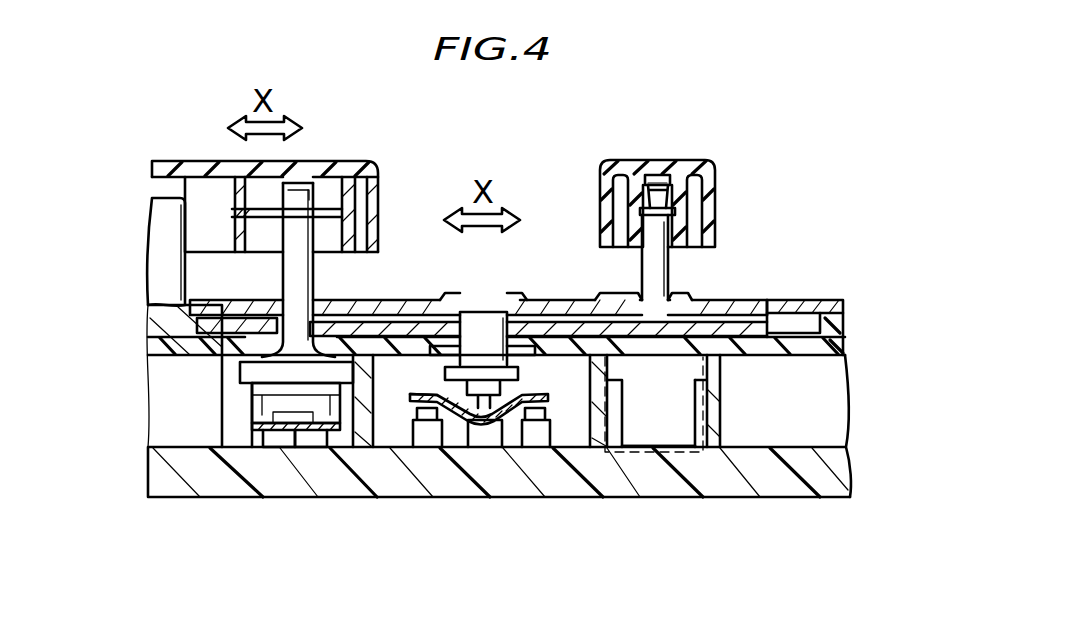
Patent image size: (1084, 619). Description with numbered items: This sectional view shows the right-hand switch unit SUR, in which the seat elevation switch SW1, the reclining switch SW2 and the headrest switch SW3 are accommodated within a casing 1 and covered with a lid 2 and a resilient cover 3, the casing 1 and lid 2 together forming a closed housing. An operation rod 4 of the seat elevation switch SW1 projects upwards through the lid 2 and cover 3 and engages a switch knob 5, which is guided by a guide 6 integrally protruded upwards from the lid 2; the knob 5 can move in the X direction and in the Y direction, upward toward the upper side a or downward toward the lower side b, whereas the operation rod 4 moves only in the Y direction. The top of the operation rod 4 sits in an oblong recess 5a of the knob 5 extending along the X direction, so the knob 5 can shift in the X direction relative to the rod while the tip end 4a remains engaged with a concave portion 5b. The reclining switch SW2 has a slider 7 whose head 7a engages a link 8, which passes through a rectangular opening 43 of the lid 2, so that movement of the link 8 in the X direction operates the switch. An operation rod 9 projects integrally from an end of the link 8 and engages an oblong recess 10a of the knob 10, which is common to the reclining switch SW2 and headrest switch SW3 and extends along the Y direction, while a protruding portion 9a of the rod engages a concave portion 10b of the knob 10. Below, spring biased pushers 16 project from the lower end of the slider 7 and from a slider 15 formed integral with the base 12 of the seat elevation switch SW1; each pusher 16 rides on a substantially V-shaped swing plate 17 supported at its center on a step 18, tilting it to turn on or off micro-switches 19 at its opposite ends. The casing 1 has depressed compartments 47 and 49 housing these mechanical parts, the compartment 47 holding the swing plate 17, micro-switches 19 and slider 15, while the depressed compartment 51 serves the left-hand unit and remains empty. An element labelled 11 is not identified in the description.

The casing 1 is at (833, 474).
The lid 2 is at (840, 320).
The resilient cover 3 is at (824, 300).
The operation rod 4 is at (305, 276).
The tip end 4a is at (292, 195).
The switch knob 5 is at (183, 161).
The oblong recess 5a is at (265, 240).
The concave portion 5b is at (330, 212).
The guide 6 is at (160, 257).
The slider 7 is at (445, 372).
The head 7a is at (482, 328).
The link 8 is at (413, 322).
The operation rod 9 is at (665, 276).
The protruding portion 9a is at (650, 195).
The knob 10 is at (702, 160).
The oblong recess 10a is at (660, 178).
The concave portion 10b is at (675, 202).
The slider 11 is at (197, 320).
The base 12 is at (245, 370).
The slider 15 is at (255, 398).
The spring biased pusher 16 is at (255, 427).
The swing plate 17 is at (428, 391).
The step 18 is at (484, 450).
The micro-switch 19 is at (422, 450).
The rectangular opening 43 is at (522, 348).
The depressed compartment 47 is at (307, 448).
The depressed compartment 49 is at (345, 450).
The depressed compartment 51 is at (661, 447).
The upper side a is at (772, 299).
The lower side b is at (780, 497).
The seat elevation switch SW1 is at (311, 460).
The reclining switch SW2 is at (510, 452).
The headrest switch SW3 is at (705, 457).
The right-hand switch unit SUR is at (165, 565).